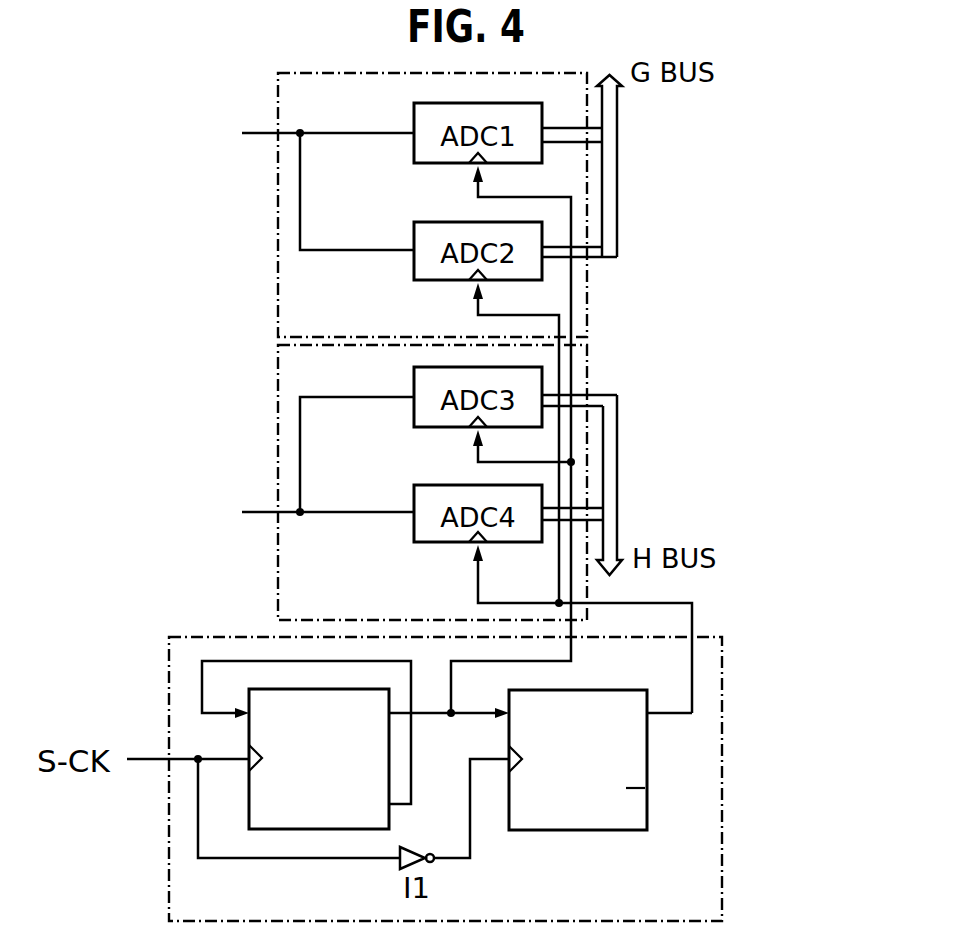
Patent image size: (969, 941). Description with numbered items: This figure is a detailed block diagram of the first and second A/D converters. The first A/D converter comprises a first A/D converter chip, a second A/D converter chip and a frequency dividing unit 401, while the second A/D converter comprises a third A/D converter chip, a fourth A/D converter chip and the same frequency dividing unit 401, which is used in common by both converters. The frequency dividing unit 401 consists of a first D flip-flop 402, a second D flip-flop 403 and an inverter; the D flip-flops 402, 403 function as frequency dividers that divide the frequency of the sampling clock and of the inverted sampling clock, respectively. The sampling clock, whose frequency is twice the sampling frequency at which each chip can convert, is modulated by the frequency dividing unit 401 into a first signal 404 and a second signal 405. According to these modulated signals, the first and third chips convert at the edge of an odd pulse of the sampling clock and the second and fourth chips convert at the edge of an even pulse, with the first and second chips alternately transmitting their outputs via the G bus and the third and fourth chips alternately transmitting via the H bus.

The frequency dividing unit 401 is at (722, 672).
The D flip-flop 402 is at (317, 829).
The D flip-flop 403 is at (583, 830).
The signal 404 is at (430, 717).
The signal 405 is at (680, 717).